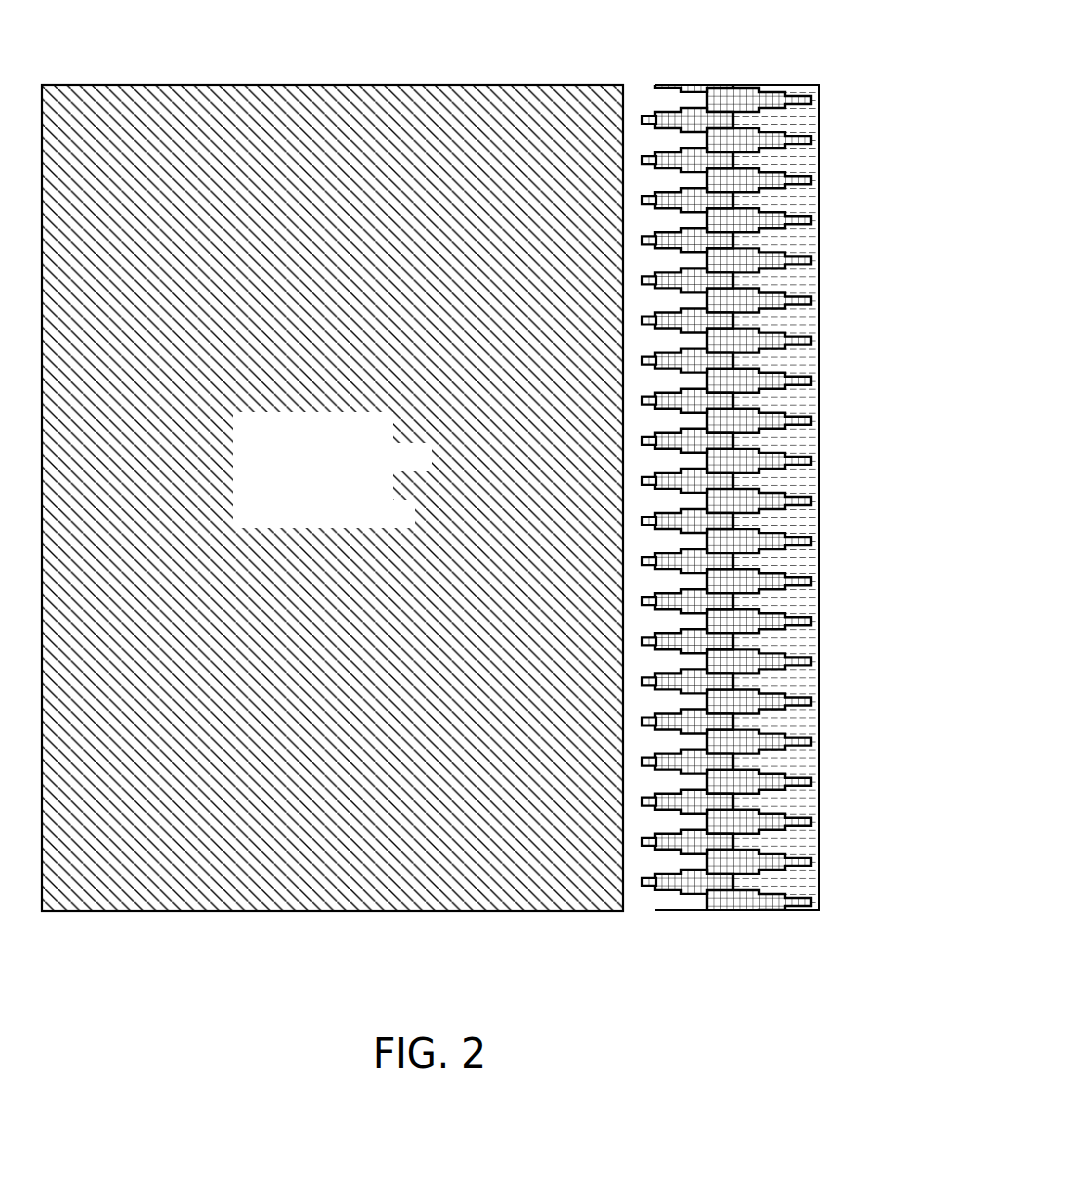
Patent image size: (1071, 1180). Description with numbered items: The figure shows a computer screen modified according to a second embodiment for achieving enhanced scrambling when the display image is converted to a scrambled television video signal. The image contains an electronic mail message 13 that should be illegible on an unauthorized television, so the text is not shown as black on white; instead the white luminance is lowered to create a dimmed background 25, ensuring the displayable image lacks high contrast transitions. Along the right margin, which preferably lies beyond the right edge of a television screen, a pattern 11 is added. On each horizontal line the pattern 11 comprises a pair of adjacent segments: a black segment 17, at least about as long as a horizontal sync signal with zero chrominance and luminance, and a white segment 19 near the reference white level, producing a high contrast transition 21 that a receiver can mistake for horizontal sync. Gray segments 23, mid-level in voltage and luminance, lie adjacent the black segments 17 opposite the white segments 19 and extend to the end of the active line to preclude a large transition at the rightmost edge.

The pattern 11 is at (748, 499).
The electronic mail message 13 is at (393, 415).
The black segment 17 is at (672, 120).
The white segment 19 is at (684, 908).
The high contrast transition 21 is at (670, 130).
The gray segment 23 is at (819, 357).
The dimmed background 25 is at (343, 898).